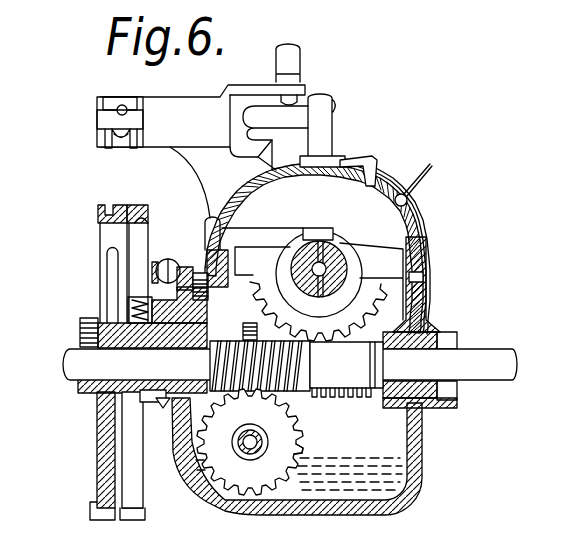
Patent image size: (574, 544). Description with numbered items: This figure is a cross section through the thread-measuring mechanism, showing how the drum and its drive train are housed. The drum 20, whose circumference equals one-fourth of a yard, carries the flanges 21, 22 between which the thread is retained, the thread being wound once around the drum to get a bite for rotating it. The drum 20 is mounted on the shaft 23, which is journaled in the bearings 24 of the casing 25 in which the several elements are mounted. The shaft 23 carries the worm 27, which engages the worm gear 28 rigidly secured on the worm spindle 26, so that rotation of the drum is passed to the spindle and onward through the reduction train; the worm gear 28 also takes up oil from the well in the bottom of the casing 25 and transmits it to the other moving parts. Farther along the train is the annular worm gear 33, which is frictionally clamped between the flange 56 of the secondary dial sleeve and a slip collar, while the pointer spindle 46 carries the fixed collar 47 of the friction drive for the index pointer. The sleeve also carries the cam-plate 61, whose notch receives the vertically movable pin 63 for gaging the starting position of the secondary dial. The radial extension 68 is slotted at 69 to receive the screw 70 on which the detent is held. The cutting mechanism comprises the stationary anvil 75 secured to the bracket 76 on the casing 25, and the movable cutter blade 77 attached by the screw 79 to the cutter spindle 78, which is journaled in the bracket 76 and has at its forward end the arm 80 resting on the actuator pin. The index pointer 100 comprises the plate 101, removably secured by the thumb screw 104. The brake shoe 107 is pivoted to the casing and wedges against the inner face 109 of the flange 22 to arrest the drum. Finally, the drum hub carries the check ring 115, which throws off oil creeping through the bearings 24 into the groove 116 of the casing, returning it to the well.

The drum 20 is at (109, 204).
The flange 21 is at (96, 208).
The flange 22 is at (136, 206).
The shaft 23 is at (65, 362).
The bearings 24 is at (428, 325).
The casing 25 is at (422, 432).
The worm spindle 26 is at (250, 442).
The worm 27 is at (296, 384).
The worm gear 28 is at (292, 446).
The worm gear 33 is at (416, 277).
The spindle 46 is at (341, 261).
The fixed collar 47 is at (338, 240).
The flange 56 is at (357, 279).
The cam-plate 61 is at (416, 300).
The pin 63 is at (326, 130).
The radial extension 68 is at (205, 230).
The slot 69 is at (312, 284).
The screw 70 is at (160, 258).
The stationary plate or anvil 75 is at (98, 103).
The bracket 76 is at (204, 127).
The movable cutter blade 77 is at (120, 105).
The cutter spindle 78 is at (100, 123).
The screw 79 is at (125, 107).
The arm 80 is at (293, 120).
The index pointer 100 is at (371, 159).
The plate 101 is at (417, 222).
The thumb screw 104 is at (415, 197).
The brake shoe 107 is at (126, 308).
The inner face 109 is at (187, 255).
The check ring or flange 115 is at (140, 394).
The groove 116 is at (157, 400).